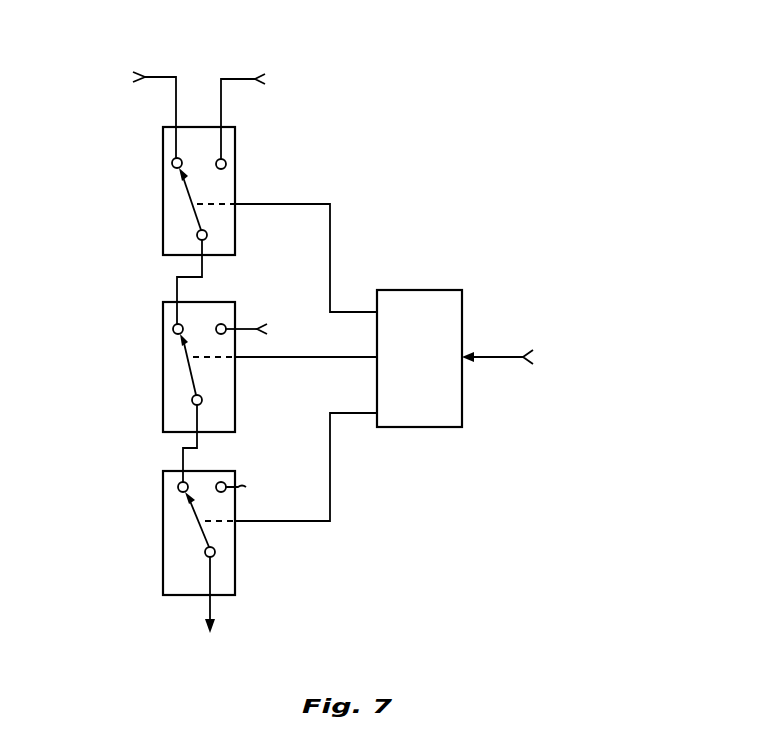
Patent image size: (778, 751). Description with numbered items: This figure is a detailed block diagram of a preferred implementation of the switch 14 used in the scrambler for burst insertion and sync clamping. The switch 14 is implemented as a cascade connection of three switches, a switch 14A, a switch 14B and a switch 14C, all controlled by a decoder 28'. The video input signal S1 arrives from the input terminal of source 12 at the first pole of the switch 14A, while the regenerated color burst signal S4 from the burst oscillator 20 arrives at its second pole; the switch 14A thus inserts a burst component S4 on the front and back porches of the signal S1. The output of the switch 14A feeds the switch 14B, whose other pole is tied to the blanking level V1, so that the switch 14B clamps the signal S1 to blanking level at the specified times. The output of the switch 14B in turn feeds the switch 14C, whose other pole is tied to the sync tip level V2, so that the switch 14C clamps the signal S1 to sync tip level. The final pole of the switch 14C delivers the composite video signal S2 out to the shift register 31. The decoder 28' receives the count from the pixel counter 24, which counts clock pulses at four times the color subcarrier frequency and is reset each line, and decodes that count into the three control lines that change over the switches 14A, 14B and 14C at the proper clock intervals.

The switch 14 is at (108, 296).
The switch 14A is at (163, 177).
The switch 14B is at (163, 390).
The switch 14C is at (163, 549).
The decoder 28' is at (419, 344).
The input terminal 12 is at (73, 79).
The burst oscillator 20 is at (333, 81).
The counter 24 is at (572, 354).
The shift register 31 is at (214, 663).
The input video signal S1 is at (143, 96).
The regenerated color burst signal S4 is at (252, 97).
The composite video signal S2 is at (221, 595).
The blanking level V1 is at (257, 330).
The sync tip level V2 is at (245, 488).